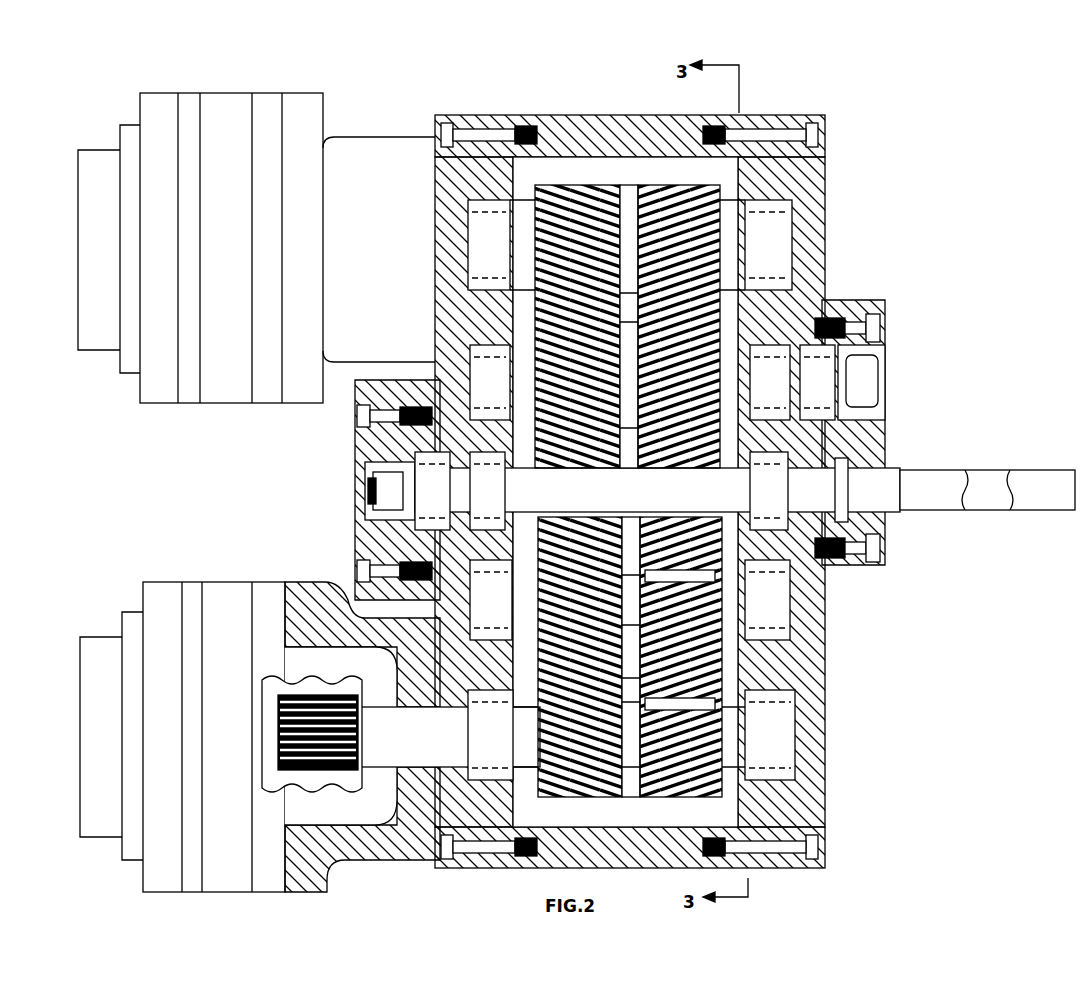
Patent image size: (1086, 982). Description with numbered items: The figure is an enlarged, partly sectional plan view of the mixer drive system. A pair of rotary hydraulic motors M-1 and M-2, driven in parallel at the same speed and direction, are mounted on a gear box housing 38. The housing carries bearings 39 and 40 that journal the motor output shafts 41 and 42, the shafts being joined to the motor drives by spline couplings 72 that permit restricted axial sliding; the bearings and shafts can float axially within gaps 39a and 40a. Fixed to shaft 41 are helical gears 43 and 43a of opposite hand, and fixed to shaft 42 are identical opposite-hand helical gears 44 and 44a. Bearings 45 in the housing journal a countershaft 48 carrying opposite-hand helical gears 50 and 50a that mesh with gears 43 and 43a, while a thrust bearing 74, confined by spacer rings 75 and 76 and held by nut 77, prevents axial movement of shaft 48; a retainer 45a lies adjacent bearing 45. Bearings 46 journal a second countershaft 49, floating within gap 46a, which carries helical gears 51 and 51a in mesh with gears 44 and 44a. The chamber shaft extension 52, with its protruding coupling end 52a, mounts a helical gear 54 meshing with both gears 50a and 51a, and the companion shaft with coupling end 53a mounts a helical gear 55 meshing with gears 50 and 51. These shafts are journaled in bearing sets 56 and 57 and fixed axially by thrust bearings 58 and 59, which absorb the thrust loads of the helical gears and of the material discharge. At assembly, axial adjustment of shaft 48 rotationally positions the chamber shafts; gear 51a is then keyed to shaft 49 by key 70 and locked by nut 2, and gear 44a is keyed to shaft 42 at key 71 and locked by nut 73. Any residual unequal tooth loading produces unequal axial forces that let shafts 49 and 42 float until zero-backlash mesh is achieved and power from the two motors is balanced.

The nut 2 is at (700, 655).
The gear box housing 38 is at (580, 130).
The bearing 39 is at (499, 256).
The gap 39a is at (455, 225).
The bearing 40 is at (500, 746).
The gap 40a is at (470, 775).
The output shaft 41 is at (452, 262).
The output shaft 42 is at (420, 740).
The helical gear 43 is at (535, 215).
The helical gear 43a is at (725, 218).
The helical gear 44 is at (598, 795).
The helical gear 44a is at (705, 795).
The bearing 45 is at (500, 393).
The bearing retainer 45a is at (520, 335).
The bearing 46 is at (501, 611).
The gap 46a is at (330, 582).
The countershaft 48 is at (862, 345).
The countershaft 49 is at (760, 612).
The helical gear 50 is at (520, 322).
The helical gear 50a is at (805, 302).
The helical gear 51 is at (440, 568).
The helical gear 51a is at (715, 650).
The chamber shaft extension 52 is at (578, 503).
The coupling end 52a is at (1043, 482).
The coupling end 53a is at (978, 480).
The helical gear 54 is at (830, 440).
The helical gear 55 is at (470, 395).
The bearing 56 is at (779, 503).
The bearing 57 is at (497, 503).
The thrust bearing 58 is at (858, 498).
The thrust bearing 59 is at (442, 503).
The key 70 is at (835, 552).
The key 71 is at (735, 700).
The spline coupling 72 is at (335, 770).
The nut 73 is at (735, 760).
The thrust bearing 74 is at (827, 393).
The spacer ring 75 is at (880, 312).
The spacer ring 76 is at (830, 425).
The nut 77 is at (858, 388).
The hydraulic motor M-1 is at (232, 378).
The hydraulic motor M-2 is at (230, 600).